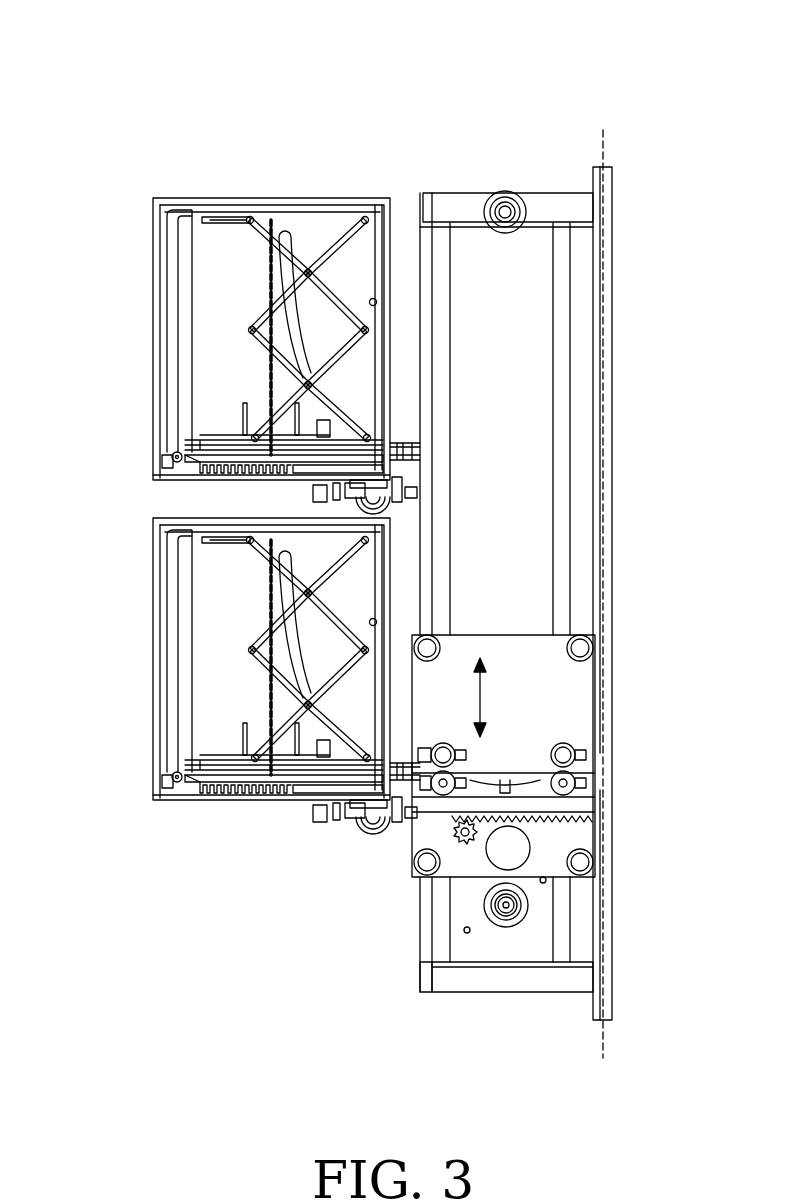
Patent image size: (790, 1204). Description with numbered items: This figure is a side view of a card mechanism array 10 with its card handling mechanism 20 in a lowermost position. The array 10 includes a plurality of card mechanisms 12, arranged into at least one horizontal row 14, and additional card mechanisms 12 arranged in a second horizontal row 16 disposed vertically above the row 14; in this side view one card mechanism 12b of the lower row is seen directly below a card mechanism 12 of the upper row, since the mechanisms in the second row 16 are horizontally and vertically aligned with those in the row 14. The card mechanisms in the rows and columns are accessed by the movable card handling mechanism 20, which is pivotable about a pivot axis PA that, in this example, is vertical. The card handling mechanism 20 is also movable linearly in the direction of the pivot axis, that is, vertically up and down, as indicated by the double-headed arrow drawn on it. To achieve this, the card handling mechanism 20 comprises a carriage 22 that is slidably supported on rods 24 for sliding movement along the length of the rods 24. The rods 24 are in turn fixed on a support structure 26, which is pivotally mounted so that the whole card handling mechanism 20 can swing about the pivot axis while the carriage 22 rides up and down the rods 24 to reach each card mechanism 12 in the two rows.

The card mechanism array 10 is at (162, 55).
The card mechanism 12 is at (153, 315).
The card mechanism 12b is at (153, 650).
The second horizontal row 16 is at (135, 367).
The horizontal row 14 is at (120, 712).
The rods 24 is at (440, 242).
The support structure 26 is at (603, 546).
The carriage 22 is at (540, 680).
The card handling mechanism 20 is at (556, 756).